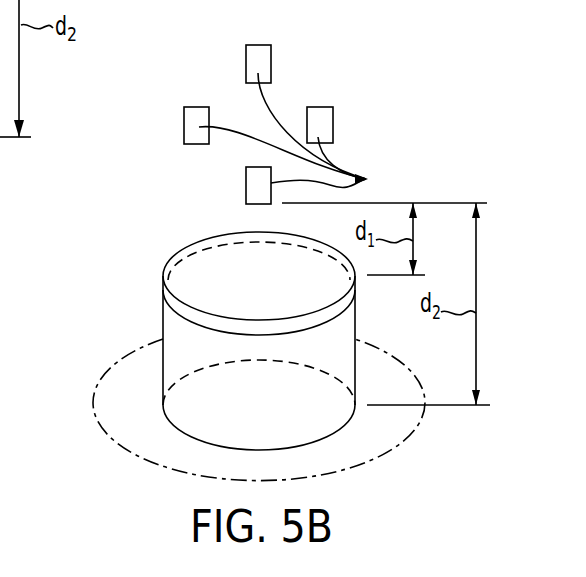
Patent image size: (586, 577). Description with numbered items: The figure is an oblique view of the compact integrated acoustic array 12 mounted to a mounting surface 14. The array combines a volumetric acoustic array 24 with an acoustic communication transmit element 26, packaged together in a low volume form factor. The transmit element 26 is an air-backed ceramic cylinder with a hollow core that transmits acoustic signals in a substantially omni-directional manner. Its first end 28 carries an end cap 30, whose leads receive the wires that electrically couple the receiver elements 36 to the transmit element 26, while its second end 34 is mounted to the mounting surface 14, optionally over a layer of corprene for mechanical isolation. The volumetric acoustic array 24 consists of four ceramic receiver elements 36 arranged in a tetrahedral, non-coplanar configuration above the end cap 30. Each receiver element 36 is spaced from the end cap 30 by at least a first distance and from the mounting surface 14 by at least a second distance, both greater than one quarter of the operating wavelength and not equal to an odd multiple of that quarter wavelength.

The integrated acoustic array 12 is at (236, 273).
The mounting surface 14 is at (120, 392).
The volumetric acoustic array 24 is at (368, 90).
The acoustic communication transmit element 26 is at (355, 336).
The first end 28 is at (174, 238).
The end cap 30 is at (163, 302).
The second end 34 is at (150, 421).
The receiver elements 36 is at (296, 133).